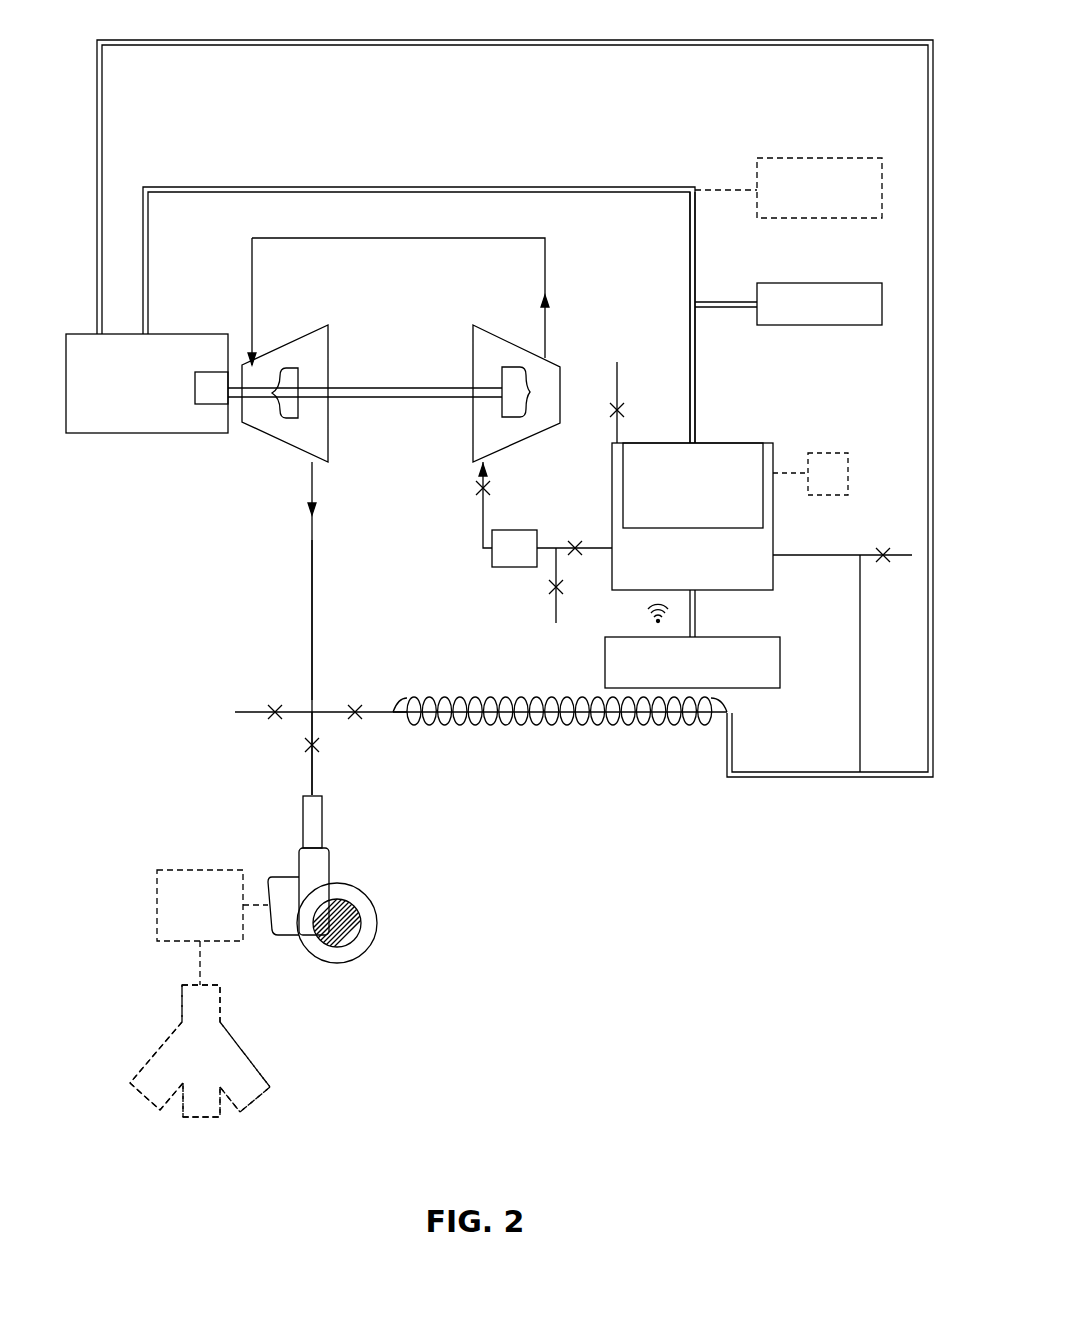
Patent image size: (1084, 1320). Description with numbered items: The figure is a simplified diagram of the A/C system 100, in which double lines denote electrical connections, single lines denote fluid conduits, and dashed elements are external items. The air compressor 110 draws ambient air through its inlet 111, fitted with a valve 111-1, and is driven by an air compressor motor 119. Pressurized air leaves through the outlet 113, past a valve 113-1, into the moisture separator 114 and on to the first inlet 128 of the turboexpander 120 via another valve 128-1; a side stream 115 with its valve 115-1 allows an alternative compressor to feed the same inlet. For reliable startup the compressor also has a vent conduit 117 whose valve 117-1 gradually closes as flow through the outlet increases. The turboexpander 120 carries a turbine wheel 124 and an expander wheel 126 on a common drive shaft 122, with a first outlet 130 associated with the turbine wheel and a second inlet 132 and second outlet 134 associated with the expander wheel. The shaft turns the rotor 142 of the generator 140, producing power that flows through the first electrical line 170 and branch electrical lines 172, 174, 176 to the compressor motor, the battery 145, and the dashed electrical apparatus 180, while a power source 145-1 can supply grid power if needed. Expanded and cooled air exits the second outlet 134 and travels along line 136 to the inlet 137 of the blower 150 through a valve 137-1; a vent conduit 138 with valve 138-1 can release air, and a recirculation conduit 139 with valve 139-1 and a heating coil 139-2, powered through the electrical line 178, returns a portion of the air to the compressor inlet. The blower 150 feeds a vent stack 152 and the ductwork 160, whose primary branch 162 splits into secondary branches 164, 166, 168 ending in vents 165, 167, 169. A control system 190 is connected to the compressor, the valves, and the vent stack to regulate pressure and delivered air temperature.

The A/C system 100 is at (662, 849).
The air compressor 110 is at (775, 580).
The inlet of the air compressor 111 is at (905, 560).
The valve 111-1 is at (880, 552).
The outlet of the air compressor 113 is at (547, 553).
The valve 113-1 is at (572, 548).
The moisture separator 114 is at (488, 553).
The side stream 115 is at (553, 620).
The valve 115-1 is at (553, 590).
The vent conduit 117 is at (622, 385).
The valve 117-1 is at (624, 408).
The air compressor motor 119 is at (765, 457).
The turboexpander 120 is at (430, 412).
The drive shaft 122 is at (385, 398).
The turbine wheel 124 is at (502, 378).
The expander wheel 126 is at (290, 405).
The first inlet 128 is at (480, 528).
The valve 128-1 is at (490, 480).
The first outlet 130 is at (548, 318).
The second inlet 132 is at (252, 318).
The second outlet 134 is at (310, 490).
The exhaust line 136 is at (310, 575).
The inlet of the blower 137 is at (318, 780).
The valve 137-1 is at (318, 745).
The vent conduit 138 is at (245, 712).
The valve 138-1 is at (275, 725).
The recirculation conduit 139 is at (395, 710).
The valve 139-1 is at (355, 710).
The heating coil 139-2 is at (580, 728).
The generator 140 is at (152, 433).
The rotor 142 is at (212, 404).
The battery 145 is at (828, 283).
The power source 145-1 is at (840, 453).
The blower 150 is at (350, 893).
The vent stack 152 is at (190, 870).
The ductwork 160 is at (298, 1076).
The primary branch 162 is at (222, 1010).
The secondary branch 164 is at (165, 1062).
The vent 165 is at (138, 1093).
The secondary branch 166 is at (195, 1115).
The vent 167 is at (210, 1118).
The secondary branch 168 is at (252, 1065).
The vent 169 is at (255, 1100).
The first electrical line 170 is at (290, 187).
The branch electrical line 172 is at (697, 228).
The branch electrical line 174 is at (725, 188).
The branch electrical line 176 is at (700, 302).
The electrical line 178 is at (515, 40).
The electrical apparatus 180 is at (820, 158).
The control system 190 is at (780, 665).